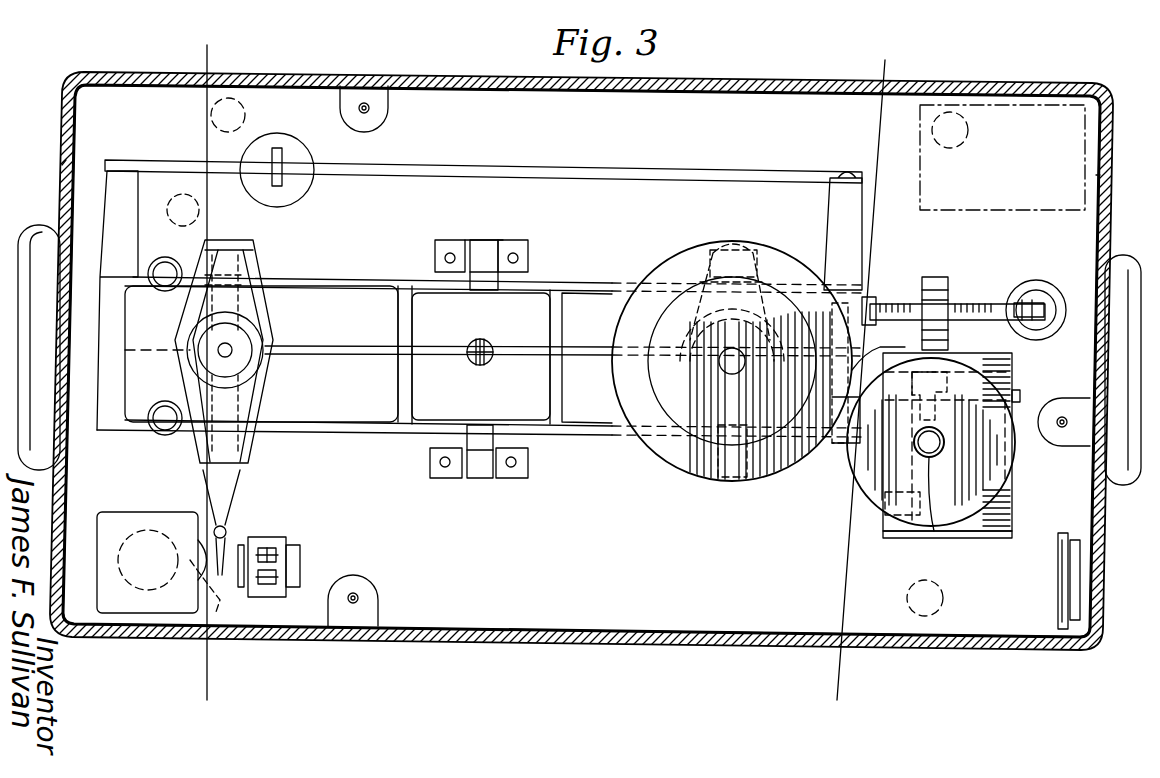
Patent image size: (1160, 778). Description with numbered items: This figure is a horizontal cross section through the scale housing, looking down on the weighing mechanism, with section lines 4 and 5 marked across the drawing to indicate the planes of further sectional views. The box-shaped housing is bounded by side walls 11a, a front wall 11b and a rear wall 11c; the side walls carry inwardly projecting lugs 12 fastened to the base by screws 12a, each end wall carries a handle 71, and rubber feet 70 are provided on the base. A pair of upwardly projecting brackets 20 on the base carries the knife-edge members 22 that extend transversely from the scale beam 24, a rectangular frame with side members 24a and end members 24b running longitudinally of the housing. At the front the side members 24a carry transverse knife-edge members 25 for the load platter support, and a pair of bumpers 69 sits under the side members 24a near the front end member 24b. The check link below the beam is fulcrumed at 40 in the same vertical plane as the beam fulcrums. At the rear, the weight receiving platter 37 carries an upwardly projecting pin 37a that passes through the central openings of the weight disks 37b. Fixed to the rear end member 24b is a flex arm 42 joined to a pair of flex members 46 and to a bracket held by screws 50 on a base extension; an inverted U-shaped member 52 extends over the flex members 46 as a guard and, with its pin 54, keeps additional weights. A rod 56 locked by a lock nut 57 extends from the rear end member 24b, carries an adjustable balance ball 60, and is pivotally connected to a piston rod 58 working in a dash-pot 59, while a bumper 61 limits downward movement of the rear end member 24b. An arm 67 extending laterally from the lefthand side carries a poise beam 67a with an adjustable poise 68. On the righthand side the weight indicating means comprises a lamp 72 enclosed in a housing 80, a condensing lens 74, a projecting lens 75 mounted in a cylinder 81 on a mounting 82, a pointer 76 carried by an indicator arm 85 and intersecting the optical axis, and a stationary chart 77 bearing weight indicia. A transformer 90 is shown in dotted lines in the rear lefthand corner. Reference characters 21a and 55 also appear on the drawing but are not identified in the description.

The section line 4- 4 is at (207, 372).
The section line 5- 5 is at (859, 386).
The side walls 11a is at (456, 78).
The front wall 11b is at (62, 174).
The rear wall 11c is at (1096, 177).
The lugs 12 is at (325, 86).
The screws 12a is at (370, 110).
The brackets 20 is at (510, 240).
The lever pivot 21a is at (268, 340).
The knife-edge members 22 is at (455, 245).
The scale beam 24 is at (514, 353).
The side members 24a is at (376, 280).
The end members 24b is at (122, 350).
The knife-edge member 25 is at (183, 210).
The weight receiving platter 37 is at (670, 268).
The pin 37a is at (729, 372).
The weight disks 37b is at (765, 300).
The fulcrum 40 is at (484, 365).
The flex arm 42 is at (940, 372).
The flex members 46 is at (1020, 392).
The screws 50 is at (890, 532).
The inverted U-shaped member 52 is at (995, 538).
The pin 54 is at (936, 538).
The support bracket 55 is at (838, 443).
The rod 56 is at (888, 304).
The lock nut 57 is at (876, 296).
The piston rod 58 is at (1017, 305).
The dash-pot 59 is at (1050, 290).
The balance ball 60 is at (936, 277).
The bumper 61 is at (868, 362).
The arm 67 is at (138, 185).
The poise beam 67a is at (736, 172).
The poise 68 is at (300, 195).
The bumpers 69 is at (166, 257).
The rubber feet 70 is at (218, 100).
The handle 71 is at (32, 245).
The source of light 72 is at (143, 583).
The condensing lens 74 is at (205, 590).
The projecting lens 75 is at (318, 562).
The pointer 76 is at (248, 545).
The chart 77 is at (1058, 595).
The housing 80 is at (106, 512).
The cylinder 81 is at (300, 548).
The mounting 82 is at (265, 598).
The indicator arm 85 is at (210, 494).
The transformer 90 is at (1002, 157).